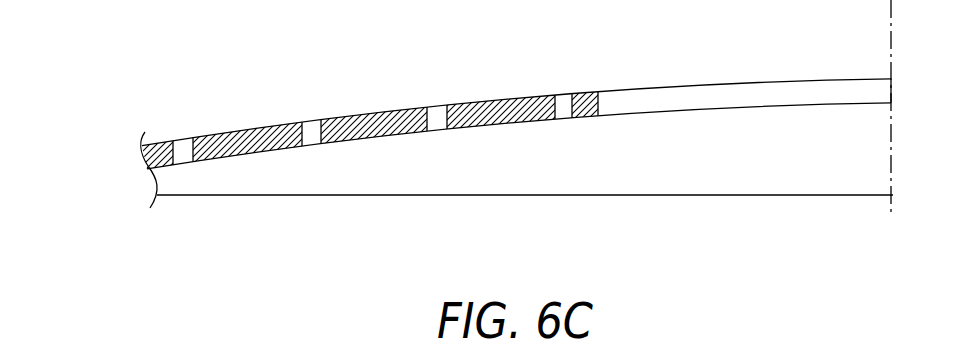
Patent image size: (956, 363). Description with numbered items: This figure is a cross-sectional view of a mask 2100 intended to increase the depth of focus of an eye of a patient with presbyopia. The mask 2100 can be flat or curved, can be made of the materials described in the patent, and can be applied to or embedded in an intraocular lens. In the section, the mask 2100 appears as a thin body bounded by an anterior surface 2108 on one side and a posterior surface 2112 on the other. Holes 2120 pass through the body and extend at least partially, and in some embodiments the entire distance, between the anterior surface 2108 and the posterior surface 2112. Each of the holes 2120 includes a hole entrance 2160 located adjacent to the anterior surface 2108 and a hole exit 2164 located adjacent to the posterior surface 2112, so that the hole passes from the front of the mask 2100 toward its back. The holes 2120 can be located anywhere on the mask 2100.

The mask 2100 is at (108, 113).
The anterior surface 2108 is at (240, 129).
The holes 2120 is at (309, 128).
The posterior surface 2112 is at (340, 145).
The hole entrance 2160 is at (562, 94).
The hole exit 2164 is at (558, 121).